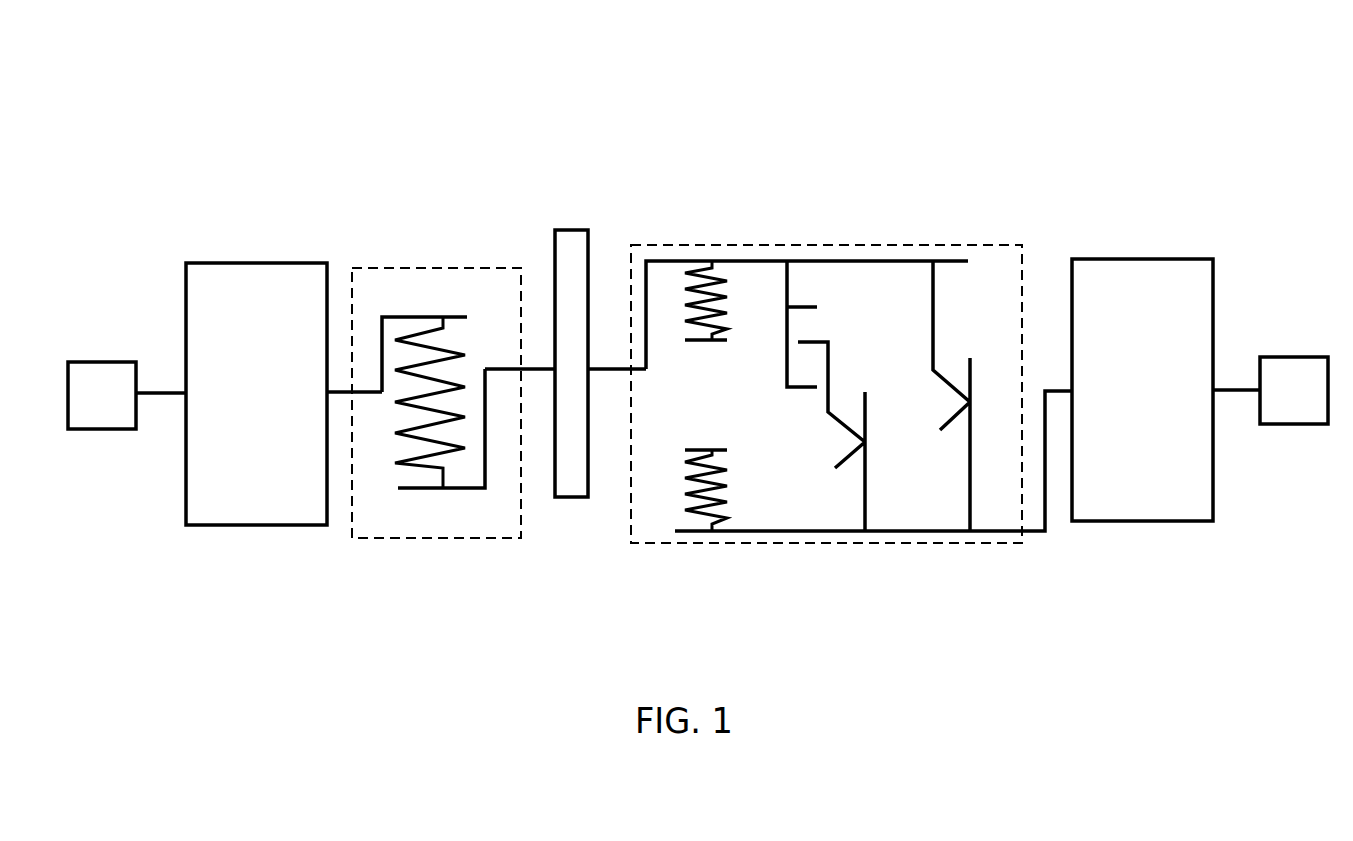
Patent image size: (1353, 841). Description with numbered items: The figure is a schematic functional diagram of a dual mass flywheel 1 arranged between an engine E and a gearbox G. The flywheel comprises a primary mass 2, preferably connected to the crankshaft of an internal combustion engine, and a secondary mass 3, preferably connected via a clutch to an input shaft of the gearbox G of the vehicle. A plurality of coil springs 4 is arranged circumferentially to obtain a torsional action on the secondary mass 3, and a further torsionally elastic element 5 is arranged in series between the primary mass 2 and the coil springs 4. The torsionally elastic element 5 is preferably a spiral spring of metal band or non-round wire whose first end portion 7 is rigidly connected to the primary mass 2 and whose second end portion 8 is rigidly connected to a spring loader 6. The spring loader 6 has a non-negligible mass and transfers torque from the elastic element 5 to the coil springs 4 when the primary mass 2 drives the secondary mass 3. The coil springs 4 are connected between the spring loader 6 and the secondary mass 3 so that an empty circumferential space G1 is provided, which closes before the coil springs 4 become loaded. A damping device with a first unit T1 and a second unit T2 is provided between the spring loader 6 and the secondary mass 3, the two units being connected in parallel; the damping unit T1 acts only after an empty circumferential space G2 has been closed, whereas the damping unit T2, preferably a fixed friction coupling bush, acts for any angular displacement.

The dual mass flywheel 1 is at (1067, 99).
The primary mass 2 is at (210, 280).
The secondary mass 3 is at (1172, 275).
The coil springs 4 is at (727, 300).
The torsionally elastic element 5 is at (412, 438).
The spring loader 6 is at (575, 483).
The first end portion 7 is at (343, 391).
The second end portion 8 is at (540, 366).
The electric machine E is at (99, 372).
The gearbox G is at (1297, 366).
The empty circumferential space G1 is at (826, 394).
The empty circumferential space G2 is at (808, 324).
The first damping unit T1 is at (831, 436).
The second damping unit T2 is at (948, 396).